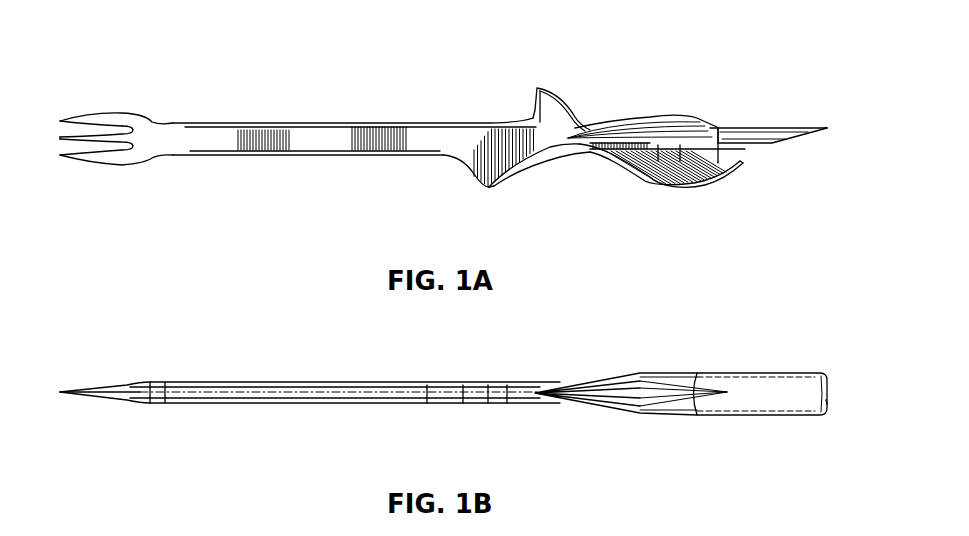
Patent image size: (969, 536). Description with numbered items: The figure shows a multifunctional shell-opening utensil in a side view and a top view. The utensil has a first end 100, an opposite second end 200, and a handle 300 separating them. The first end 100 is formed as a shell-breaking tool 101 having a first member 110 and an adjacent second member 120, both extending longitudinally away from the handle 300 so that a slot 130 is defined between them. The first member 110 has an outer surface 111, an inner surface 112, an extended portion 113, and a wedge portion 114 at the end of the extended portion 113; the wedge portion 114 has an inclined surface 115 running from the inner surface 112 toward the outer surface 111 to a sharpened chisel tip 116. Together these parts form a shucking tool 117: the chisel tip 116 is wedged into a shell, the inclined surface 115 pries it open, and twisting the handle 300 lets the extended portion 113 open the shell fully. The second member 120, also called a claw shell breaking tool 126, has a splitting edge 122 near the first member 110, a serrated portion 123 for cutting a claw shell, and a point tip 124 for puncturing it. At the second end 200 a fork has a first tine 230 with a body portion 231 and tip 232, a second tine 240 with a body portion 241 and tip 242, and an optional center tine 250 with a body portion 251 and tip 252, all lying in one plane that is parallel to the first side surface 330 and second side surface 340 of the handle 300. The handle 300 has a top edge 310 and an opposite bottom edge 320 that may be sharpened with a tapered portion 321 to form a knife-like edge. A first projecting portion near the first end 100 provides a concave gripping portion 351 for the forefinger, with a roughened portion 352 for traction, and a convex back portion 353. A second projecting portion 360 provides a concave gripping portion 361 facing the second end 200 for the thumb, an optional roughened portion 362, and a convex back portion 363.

In FIG. 1A, the first end 100 is at (705, 163).
In FIG. 1A, the shell-breaking tool 101 is at (740, 198).
In FIG. 1A, the first member 110 is at (776, 134).
In FIG. 1B, the outer surface 111 is at (617, 393).
In FIG. 1A, the inner surface 112 is at (662, 185).
In FIG. 1A, the extended portion 113 is at (715, 117).
In FIG. 1B, the extended portion 113 is at (710, 403).
In FIG. 1A, the wedge portion 114 is at (802, 148).
In FIG. 1B, the wedge portion 114 is at (766, 390).
In FIG. 1A, the inclined surface 115 is at (807, 137).
In FIG. 1A, the chisel tip 116 is at (827, 128).
In FIG. 1B, the chisel tip 116 is at (828, 402).
In FIG. 1A, the shucking tool 117 is at (758, 90).
In FIG. 1A, the second member 120 is at (718, 143).
In FIG. 1A, the splitting edge 122 is at (656, 152).
In FIG. 1A, the serrated portion 123 is at (678, 152).
In FIG. 1A, the point tip 124 is at (741, 165).
In FIG. 1A, the claw shell breaking tool 126 is at (630, 222).
In FIG. 1A, the slot 130 is at (728, 153).
In FIG. 1A, the second end 200 is at (121, 136).
In FIG. 1A, the first tine 230 is at (124, 85).
In FIG. 1B, the first tine 230 is at (93, 397).
In FIG. 1A, the body portion 231 is at (91, 112).
In FIG. 1B, the body portion 231 is at (90, 390).
In FIG. 1A, the tip 232 is at (60, 121).
In FIG. 1B, the tip 232 is at (70, 393).
In FIG. 1A, the second tine 240 is at (116, 180).
In FIG. 1A, the body portion 241 is at (102, 167).
In FIG. 1A, the tip 242 is at (58, 155).
In FIG. 1A, the center tine 250 is at (102, 130).
In FIG. 1A, the body portion 251 is at (80, 139).
In FIG. 1A, the tip 252 is at (60, 137).
In FIG. 1A, the handle 300 is at (354, 131).
In FIG. 1A, the top edge 310 is at (243, 122).
In FIG. 1B, the top edge 310 is at (213, 392).
In FIG. 1A, the bottom edge 320 is at (237, 162).
In FIG. 1A, the tapered portion 321 is at (292, 162).
In FIG. 1A, the first side surface 330 is at (388, 122).
In FIG. 1B, the first side surface 330 is at (283, 407).
In FIG. 1B, the second side surface 340 is at (445, 390).
In FIG. 1A, the gripping portion 351 is at (503, 183).
In FIG. 1A, the roughened portion 352 is at (527, 162).
In FIG. 1A, the back portion 353 is at (470, 177).
In FIG. 1A, the second projecting portion 360 is at (539, 114).
In FIG. 1B, the second projecting portion 360 is at (503, 392).
In FIG. 1A, the gripping portion 361 is at (532, 102).
In FIG. 1A, the roughened portion 362 is at (533, 112).
In FIG. 1A, the back portion 363 is at (552, 90).